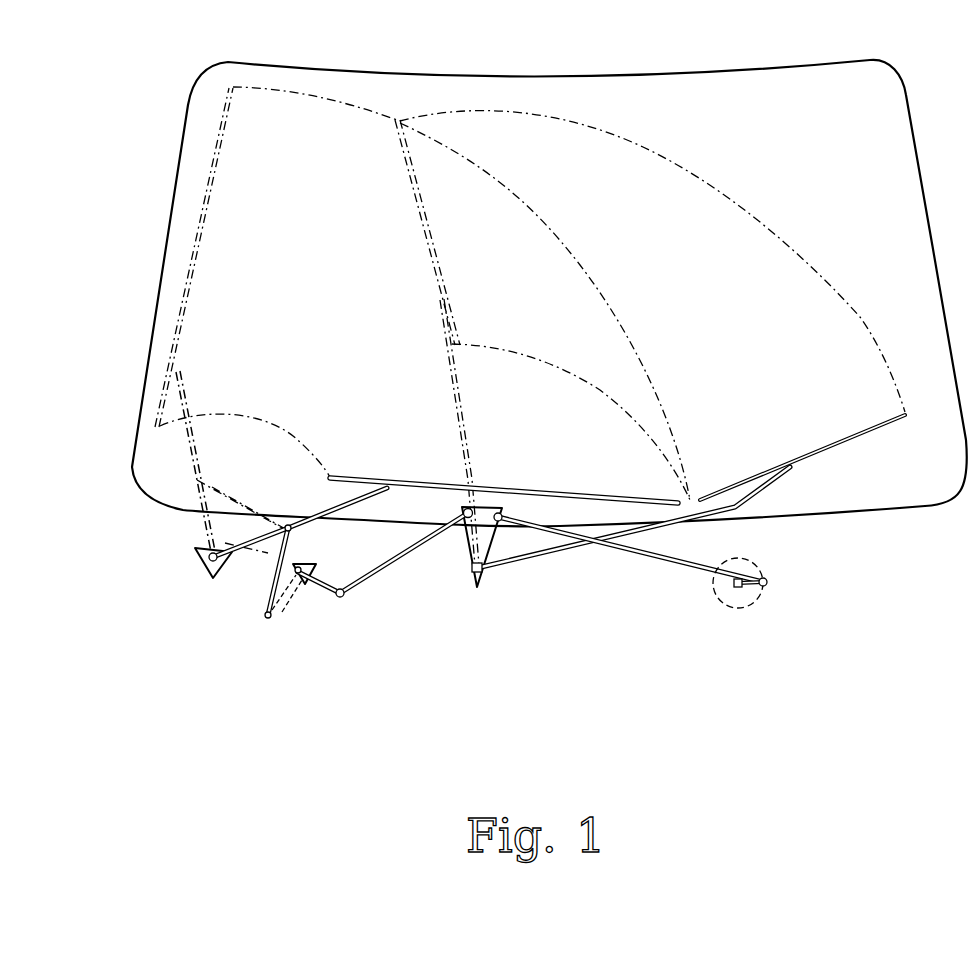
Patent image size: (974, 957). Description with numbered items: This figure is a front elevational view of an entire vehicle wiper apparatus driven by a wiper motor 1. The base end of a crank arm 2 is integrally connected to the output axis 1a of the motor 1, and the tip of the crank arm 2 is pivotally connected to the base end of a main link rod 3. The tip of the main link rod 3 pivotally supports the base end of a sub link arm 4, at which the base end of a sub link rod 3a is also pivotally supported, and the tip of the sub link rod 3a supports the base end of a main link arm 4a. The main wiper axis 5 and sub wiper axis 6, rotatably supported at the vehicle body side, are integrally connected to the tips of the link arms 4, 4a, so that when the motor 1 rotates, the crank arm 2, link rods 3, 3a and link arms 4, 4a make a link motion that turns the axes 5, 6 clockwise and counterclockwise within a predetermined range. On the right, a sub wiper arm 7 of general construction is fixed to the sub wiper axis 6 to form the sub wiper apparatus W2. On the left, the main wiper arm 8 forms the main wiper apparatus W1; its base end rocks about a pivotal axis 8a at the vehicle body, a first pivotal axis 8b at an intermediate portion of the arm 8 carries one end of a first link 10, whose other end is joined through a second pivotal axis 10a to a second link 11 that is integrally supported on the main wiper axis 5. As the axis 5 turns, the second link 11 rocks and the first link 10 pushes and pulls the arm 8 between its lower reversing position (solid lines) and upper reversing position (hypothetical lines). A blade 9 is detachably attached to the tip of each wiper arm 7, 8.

The wiper motor 1 is at (757, 593).
The output axis 1a is at (738, 587).
The crank arm 2 is at (750, 587).
The main link rod 3 is at (663, 560).
The sub link rod 3a is at (455, 542).
The sub link arm 4 is at (486, 573).
The main link arm 4a is at (398, 562).
The main wiper axis 5 is at (308, 590).
The sub wiper axis 6 is at (558, 594).
The sub wiper arm 7 is at (592, 545).
The main wiper arm 8 is at (260, 547).
The pivotal axis 8a is at (198, 558).
The first pivotal axis 8b is at (290, 522).
The blade 9 is at (384, 478).
The first link 10 is at (277, 577).
The second pivotal axis 10a is at (268, 617).
The second link 11 is at (280, 613).
The main wiper apparatus W1 is at (293, 664).
The sub wiper apparatus W2 is at (580, 574).